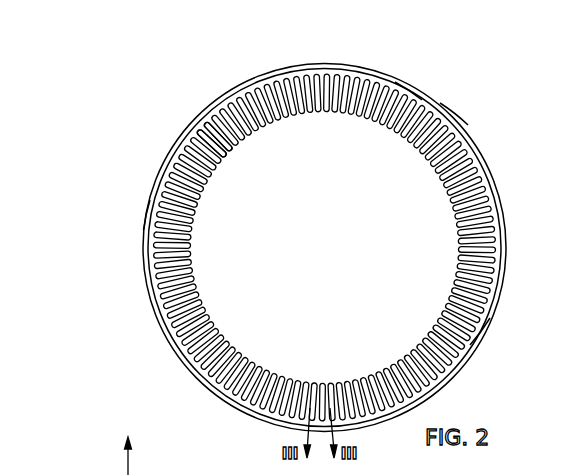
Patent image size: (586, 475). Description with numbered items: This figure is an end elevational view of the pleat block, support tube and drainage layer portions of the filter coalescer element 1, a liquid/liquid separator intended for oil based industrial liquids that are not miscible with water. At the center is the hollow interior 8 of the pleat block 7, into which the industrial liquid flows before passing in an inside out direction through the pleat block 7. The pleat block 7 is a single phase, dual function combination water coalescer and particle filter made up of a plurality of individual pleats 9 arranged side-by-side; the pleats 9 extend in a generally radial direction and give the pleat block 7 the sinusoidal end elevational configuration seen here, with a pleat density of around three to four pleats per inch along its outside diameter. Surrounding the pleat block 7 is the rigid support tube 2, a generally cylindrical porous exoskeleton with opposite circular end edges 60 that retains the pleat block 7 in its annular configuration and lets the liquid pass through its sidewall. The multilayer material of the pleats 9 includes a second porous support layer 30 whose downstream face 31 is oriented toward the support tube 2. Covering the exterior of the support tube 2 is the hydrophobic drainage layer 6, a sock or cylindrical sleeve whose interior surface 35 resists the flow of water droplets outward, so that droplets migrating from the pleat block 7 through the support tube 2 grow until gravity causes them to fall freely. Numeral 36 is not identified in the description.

The filter coalescer element 1 is at (124, 180).
The support tube 2 is at (483, 147).
The drainage layer 6 is at (138, 278).
The pleat block 7 is at (228, 157).
The hollow interior 8 is at (328, 250).
The pleats 9 is at (190, 270).
The second porous support layer 30 is at (357, 471).
The downstream face 31 is at (240, 474).
The interior surface 35 is at (410, 93).
The yoke 36 is at (455, 114).
The circular end edges 60 is at (482, 331).